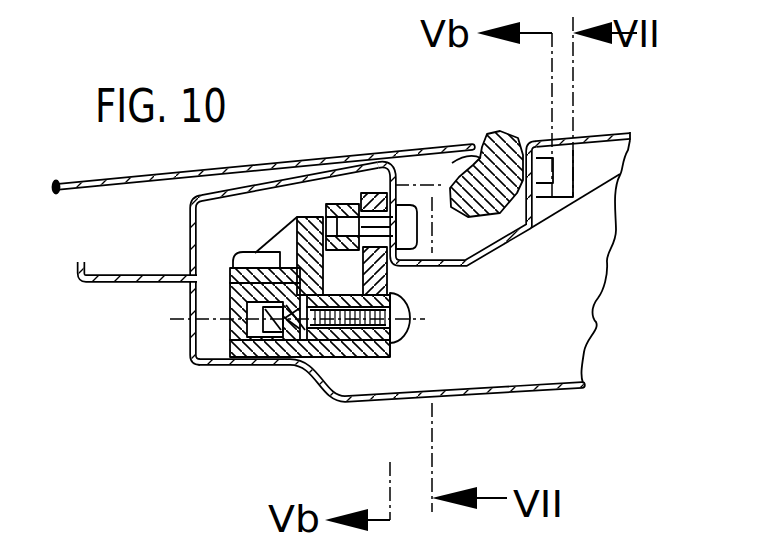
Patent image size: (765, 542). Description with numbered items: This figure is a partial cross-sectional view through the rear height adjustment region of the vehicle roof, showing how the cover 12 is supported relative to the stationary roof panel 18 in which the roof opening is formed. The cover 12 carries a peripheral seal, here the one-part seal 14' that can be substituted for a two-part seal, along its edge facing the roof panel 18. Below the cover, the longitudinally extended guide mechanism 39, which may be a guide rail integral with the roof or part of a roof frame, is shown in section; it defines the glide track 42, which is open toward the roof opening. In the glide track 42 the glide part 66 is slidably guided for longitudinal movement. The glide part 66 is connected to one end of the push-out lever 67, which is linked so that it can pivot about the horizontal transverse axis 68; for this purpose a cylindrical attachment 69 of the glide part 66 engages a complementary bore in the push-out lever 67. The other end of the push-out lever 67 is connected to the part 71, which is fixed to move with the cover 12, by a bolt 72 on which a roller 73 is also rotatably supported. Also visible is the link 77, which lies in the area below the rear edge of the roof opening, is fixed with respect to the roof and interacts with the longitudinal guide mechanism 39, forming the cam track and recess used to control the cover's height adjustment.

The cover 12 is at (597, 134).
The one-part seal 14' is at (486, 143).
The stationary roof panel 18 is at (56, 184).
The longitudinal guide mechanism 39 is at (243, 350).
The glide track 42 is at (347, 343).
The glide part 66 is at (296, 366).
The push-out lever 67 is at (383, 192).
The horizontal transverse axis 68 is at (190, 321).
The cylindrical attachment 69 is at (373, 343).
The part fixed to the cover 71 is at (510, 240).
The bolt 72 is at (371, 192).
The roller 73 is at (345, 203).
The link 77 is at (308, 215).